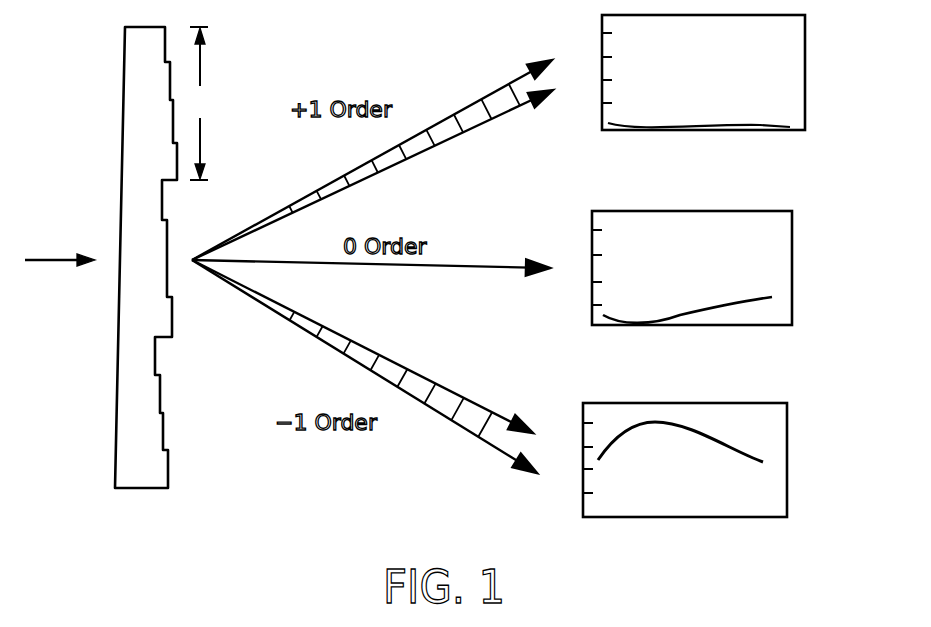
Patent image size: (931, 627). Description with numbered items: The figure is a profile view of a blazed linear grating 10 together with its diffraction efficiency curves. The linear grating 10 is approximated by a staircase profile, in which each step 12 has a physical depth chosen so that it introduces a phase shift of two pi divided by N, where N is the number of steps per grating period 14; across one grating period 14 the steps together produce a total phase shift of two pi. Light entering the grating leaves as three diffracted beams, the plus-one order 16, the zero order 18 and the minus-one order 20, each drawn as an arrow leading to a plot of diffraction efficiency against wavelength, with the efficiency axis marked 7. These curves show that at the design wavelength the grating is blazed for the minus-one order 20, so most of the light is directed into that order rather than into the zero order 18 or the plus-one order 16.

The linear grating 10 is at (119, 264).
The step 12 is at (158, 477).
The grating period 14 is at (201, 103).
The +1 order 16 is at (805, 87).
The 0 order 18 is at (792, 265).
The −1 order 20 is at (787, 455).
The intensity axis 7 is at (586, 263).